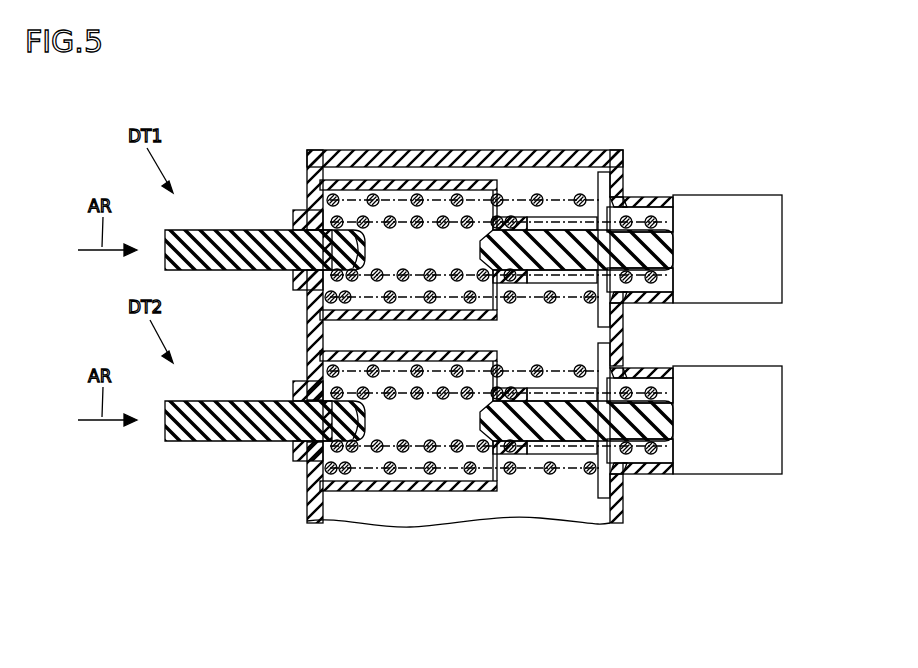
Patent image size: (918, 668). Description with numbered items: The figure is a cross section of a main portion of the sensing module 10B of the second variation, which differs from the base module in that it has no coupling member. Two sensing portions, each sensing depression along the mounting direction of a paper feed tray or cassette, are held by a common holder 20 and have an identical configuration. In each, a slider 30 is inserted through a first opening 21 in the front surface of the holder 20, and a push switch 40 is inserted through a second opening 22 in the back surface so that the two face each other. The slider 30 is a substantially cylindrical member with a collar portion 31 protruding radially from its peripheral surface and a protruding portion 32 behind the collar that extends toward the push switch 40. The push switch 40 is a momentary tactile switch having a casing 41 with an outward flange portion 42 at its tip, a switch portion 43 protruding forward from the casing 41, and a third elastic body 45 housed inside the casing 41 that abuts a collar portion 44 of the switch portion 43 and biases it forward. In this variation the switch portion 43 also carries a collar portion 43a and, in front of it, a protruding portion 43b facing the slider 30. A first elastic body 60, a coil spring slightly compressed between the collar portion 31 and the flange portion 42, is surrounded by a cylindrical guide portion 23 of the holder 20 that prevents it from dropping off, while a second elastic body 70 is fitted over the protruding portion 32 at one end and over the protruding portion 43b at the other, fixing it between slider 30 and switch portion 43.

The sensing module 10B is at (744, 114).
The holder 20 is at (405, 153).
The first opening 21 is at (300, 238).
The second opening 22 is at (622, 202).
The cylindrical guide portion 23 is at (437, 183).
The slider 30 is at (202, 244).
The collar portion 31 is at (328, 213).
The protruding portion 32 is at (365, 251).
The push switch 40 is at (725, 206).
The casing 41 is at (645, 200).
The flange portion 42 is at (600, 186).
The switch portion 43 is at (567, 247).
The collar portion 43a is at (522, 216).
The protruding portion 43b is at (486, 246).
The collar portion 44 is at (616, 278).
The third elastic body 45 is at (656, 219).
The first elastic body 60 is at (430, 303).
The second elastic body 70 is at (377, 281).